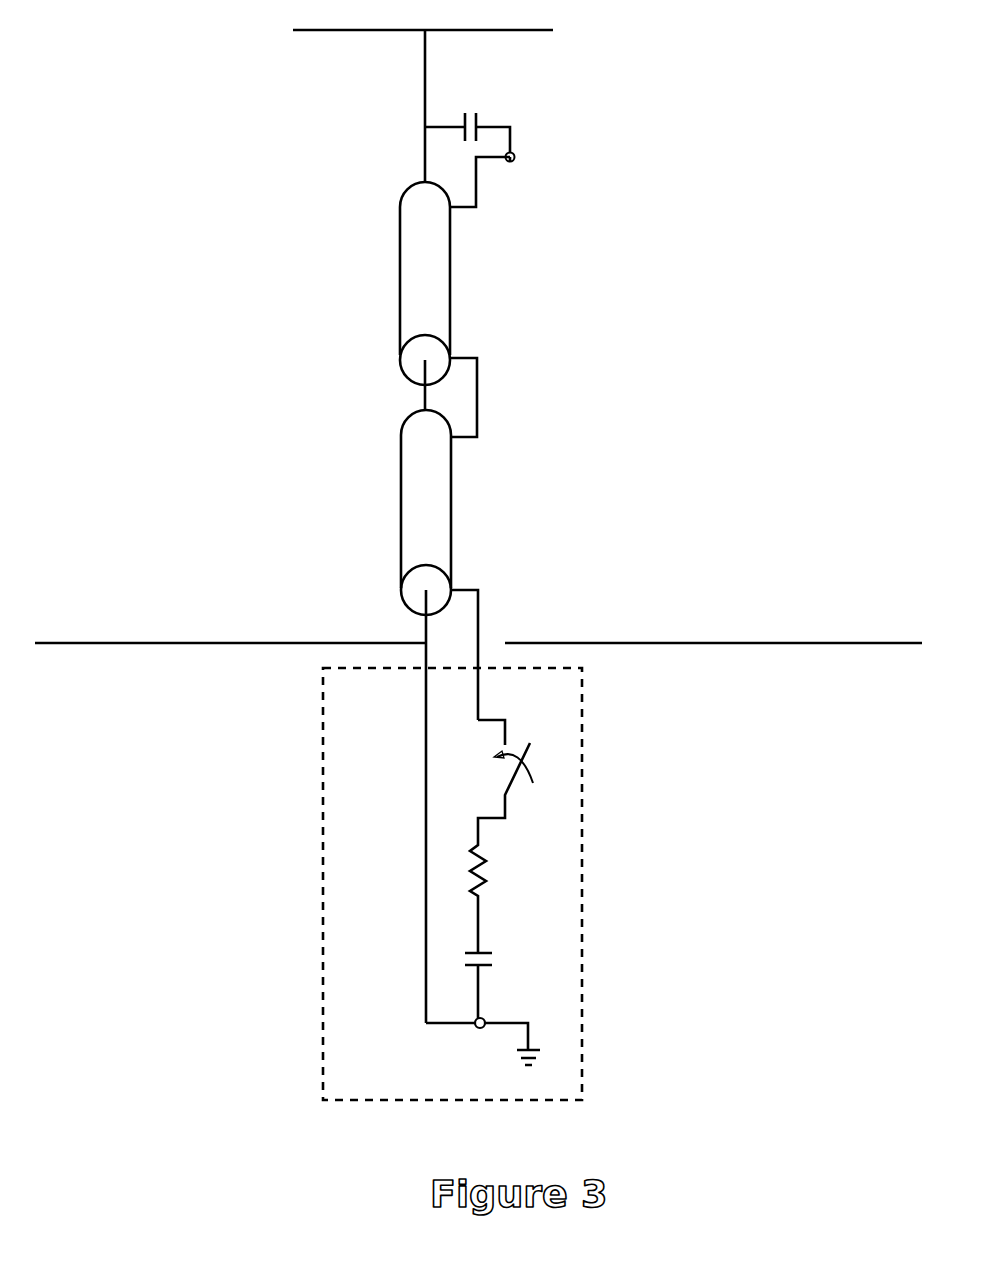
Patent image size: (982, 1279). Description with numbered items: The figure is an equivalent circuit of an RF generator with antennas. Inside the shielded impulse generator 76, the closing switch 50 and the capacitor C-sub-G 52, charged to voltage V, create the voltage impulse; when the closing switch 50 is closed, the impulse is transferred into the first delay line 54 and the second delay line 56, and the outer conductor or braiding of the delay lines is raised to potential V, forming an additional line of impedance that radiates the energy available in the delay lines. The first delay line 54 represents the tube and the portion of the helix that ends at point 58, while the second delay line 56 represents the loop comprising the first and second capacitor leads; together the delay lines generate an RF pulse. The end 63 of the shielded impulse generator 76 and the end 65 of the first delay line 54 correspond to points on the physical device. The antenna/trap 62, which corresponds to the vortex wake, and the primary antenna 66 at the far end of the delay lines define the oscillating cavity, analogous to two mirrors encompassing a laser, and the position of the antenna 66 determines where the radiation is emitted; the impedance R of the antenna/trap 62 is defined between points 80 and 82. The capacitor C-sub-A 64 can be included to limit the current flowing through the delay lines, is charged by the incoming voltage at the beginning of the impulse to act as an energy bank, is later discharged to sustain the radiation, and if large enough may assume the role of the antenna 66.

The closing switch 50 is at (524, 791).
The capacitor C_G 52 is at (503, 947).
The delay line T_1 54 is at (435, 522).
The delay line T_2 56 is at (430, 273).
The point on helix 58 is at (479, 398).
The antenna/trap 62 is at (821, 638).
The end of shielded impulse generator 63 is at (461, 1031).
The capacitor C_A 64 is at (478, 110).
The end of T_1 65 is at (420, 589).
The primary antenna 66 is at (484, 24).
The shielded impulse generator 76 is at (280, 853).
The point 80 is at (500, 716).
The point 82 is at (487, 587).